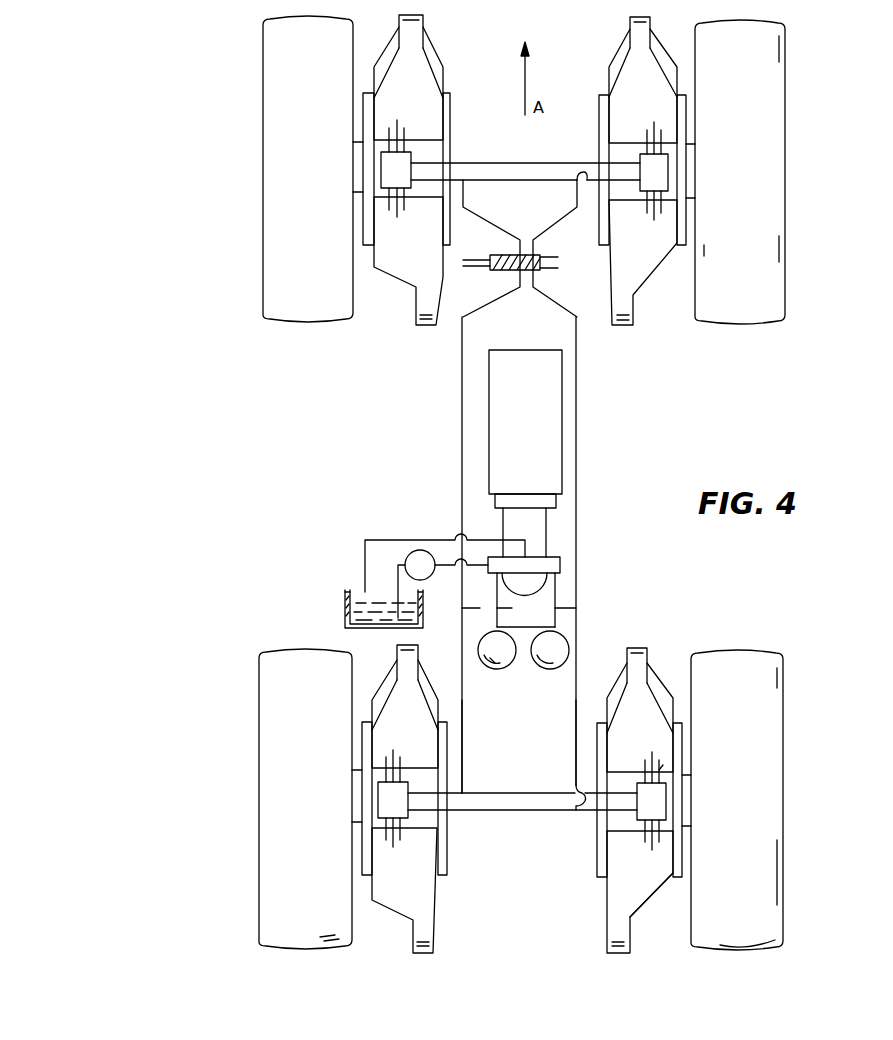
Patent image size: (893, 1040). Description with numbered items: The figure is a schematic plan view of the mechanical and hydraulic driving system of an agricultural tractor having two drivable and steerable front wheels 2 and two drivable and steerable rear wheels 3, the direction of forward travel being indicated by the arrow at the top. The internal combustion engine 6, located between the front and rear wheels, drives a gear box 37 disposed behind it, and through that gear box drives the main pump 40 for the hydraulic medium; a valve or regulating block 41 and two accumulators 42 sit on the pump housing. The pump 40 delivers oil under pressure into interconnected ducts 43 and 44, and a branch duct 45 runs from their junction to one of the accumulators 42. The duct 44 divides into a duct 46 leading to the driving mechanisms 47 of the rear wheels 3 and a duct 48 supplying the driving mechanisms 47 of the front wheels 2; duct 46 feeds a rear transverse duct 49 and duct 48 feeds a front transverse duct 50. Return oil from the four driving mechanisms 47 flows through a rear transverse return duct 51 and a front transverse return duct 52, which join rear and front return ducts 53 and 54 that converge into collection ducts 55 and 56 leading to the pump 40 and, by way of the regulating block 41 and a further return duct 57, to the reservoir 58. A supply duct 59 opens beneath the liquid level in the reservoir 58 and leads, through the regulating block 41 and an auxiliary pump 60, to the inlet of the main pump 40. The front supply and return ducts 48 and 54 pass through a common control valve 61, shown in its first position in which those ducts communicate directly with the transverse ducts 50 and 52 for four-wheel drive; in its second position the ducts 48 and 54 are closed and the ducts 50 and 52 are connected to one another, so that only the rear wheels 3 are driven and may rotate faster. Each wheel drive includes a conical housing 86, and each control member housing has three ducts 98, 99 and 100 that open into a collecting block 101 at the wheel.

The front wheels 2 is at (263, 268).
The rear wheels 3 is at (259, 847).
The internal combustion engine 6 is at (526, 358).
The gear box 37 is at (556, 500).
The pump 40 is at (546, 525).
The valve or regulating block 41 is at (560, 565).
The accumulators 42 is at (545, 668).
The duct 43 is at (555, 592).
The duct 44 is at (576, 608).
The branch duct 45 is at (555, 627).
The duct 46 is at (576, 714).
The driving mechanisms 47 is at (443, 64).
The duct 48 is at (576, 420).
The transverse duct 49 is at (518, 812).
The transverse duct 50 is at (540, 163).
The rear transverse return duct 51 is at (522, 793).
The front transverse return duct 52 is at (512, 185).
The rear return duct 53 is at (462, 742).
The front return duct 54 is at (462, 378).
The collection duct 55 is at (476, 598).
The collection duct 56 is at (515, 608).
The return duct 57 is at (392, 540).
The fluid pressure medium reservoir 58 is at (345, 602).
The supply duct 59 is at (398, 574).
The auxiliary pump 60 is at (428, 578).
The control valve 61 is at (558, 263).
The conical housing 86 is at (652, 675).
The duct 98 is at (645, 770).
The duct 99 is at (652, 838).
The duct 100 is at (662, 768).
The collecting block 101 is at (381, 172).